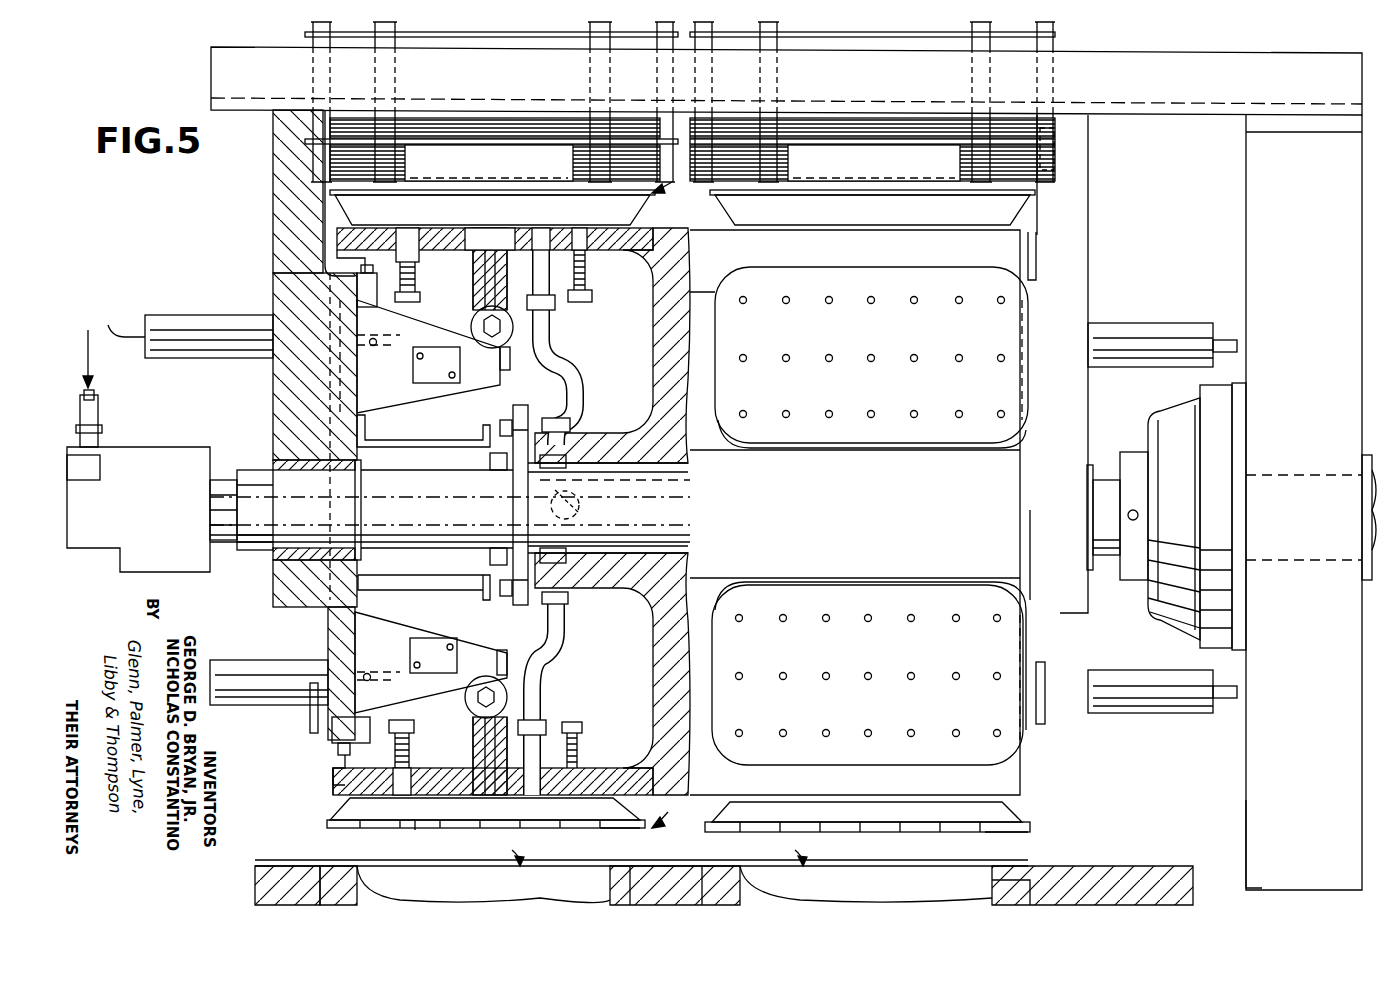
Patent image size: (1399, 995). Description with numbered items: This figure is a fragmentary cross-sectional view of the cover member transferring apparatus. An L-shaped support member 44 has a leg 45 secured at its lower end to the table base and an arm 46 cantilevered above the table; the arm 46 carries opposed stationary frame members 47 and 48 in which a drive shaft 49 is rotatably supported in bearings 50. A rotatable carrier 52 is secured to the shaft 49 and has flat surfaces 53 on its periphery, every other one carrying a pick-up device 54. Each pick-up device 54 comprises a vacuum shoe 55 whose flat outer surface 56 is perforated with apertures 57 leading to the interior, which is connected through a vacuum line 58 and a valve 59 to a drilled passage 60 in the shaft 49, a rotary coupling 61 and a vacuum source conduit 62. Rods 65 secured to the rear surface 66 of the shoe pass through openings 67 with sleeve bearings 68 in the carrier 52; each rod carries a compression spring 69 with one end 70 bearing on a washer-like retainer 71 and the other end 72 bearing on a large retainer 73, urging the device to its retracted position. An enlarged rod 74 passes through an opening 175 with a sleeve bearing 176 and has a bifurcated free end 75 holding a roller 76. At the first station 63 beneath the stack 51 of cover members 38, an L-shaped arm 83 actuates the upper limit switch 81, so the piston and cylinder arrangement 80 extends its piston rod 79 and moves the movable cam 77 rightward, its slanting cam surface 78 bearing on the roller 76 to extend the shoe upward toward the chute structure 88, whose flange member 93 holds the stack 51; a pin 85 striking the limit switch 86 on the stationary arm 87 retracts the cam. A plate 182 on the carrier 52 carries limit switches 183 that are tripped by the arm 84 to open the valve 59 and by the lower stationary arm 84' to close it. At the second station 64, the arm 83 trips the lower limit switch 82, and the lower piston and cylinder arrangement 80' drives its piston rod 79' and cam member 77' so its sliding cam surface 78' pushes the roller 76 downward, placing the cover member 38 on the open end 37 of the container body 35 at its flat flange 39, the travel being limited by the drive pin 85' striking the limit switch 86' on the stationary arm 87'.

The container body 35 is at (386, 873).
The open end 37 is at (645, 850).
The cover member 38 is at (356, 184).
The flat flange 39 is at (472, 864).
The L-shaped support member 44 is at (1248, 248).
The leg 45 is at (1246, 796).
The arm 46 is at (1163, 68).
The frame member 47 is at (275, 151).
The frame member 48 is at (1090, 264).
The drive shaft 49 is at (415, 492).
The bearings 50 is at (292, 571).
The stack 51 is at (454, 122).
The rotatable carrier 52 is at (662, 246).
The flat surfaces 53 is at (1010, 478).
The pick-up device 54 is at (344, 212).
The vacuum shoe 55 is at (416, 824).
The flat outer surface 56 is at (603, 838).
The apertures 57 is at (1006, 300).
The vacuum line 58 is at (582, 380).
The valve 59 is at (570, 428).
The drilled passage 60 is at (580, 503).
The rotary coupling 61 is at (175, 447).
The vacuum source conduit 62 is at (98, 398).
The first station 63 is at (679, 180).
The second station 64 is at (676, 812).
The rods 65 is at (586, 740).
The rear surface 66 is at (345, 791).
The openings 67 is at (542, 250).
The sleeve bearings 68 is at (585, 250).
The compression spring 69 is at (583, 296).
The end 70 is at (592, 284).
The washer-like retainer 71 is at (590, 262).
The other end 72 is at (546, 310).
The large retainer 73 is at (591, 302).
The enlarged rod 74 is at (485, 248).
The free end 75 is at (509, 372).
The roller 76 is at (505, 368).
The movable cam 77 is at (323, 356).
The cam member 77' is at (447, 716).
The slanting cam surface 78 is at (431, 505).
The sliding cam surface 78' is at (443, 740).
The piston rod 79 is at (396, 338).
The piston rod 79' is at (403, 687).
The piston and cylinder arrangement 80 is at (672, 487).
The lower piston and cylinder arrangement 80' is at (269, 676).
The upper limit switch 81 is at (357, 292).
The lower limit switch 82 is at (345, 736).
The L-shaped arm 83 is at (340, 272).
The arm 84 is at (423, 428).
The lower stationary arm 84' is at (424, 592).
The pin 85 is at (375, 363).
The drive pin 85' is at (383, 660).
The limit switch 86 is at (412, 374).
The limit switch 86' is at (442, 638).
The stationary arm 87 is at (474, 394).
The stationary arm 87' is at (502, 634).
The chute structure 88 is at (345, 38).
The flange member 93 is at (500, 142).
The opening 175 is at (488, 276).
The sleeve bearing 176 is at (478, 252).
The plate 182 is at (532, 416).
The limit switches 183 is at (515, 401).